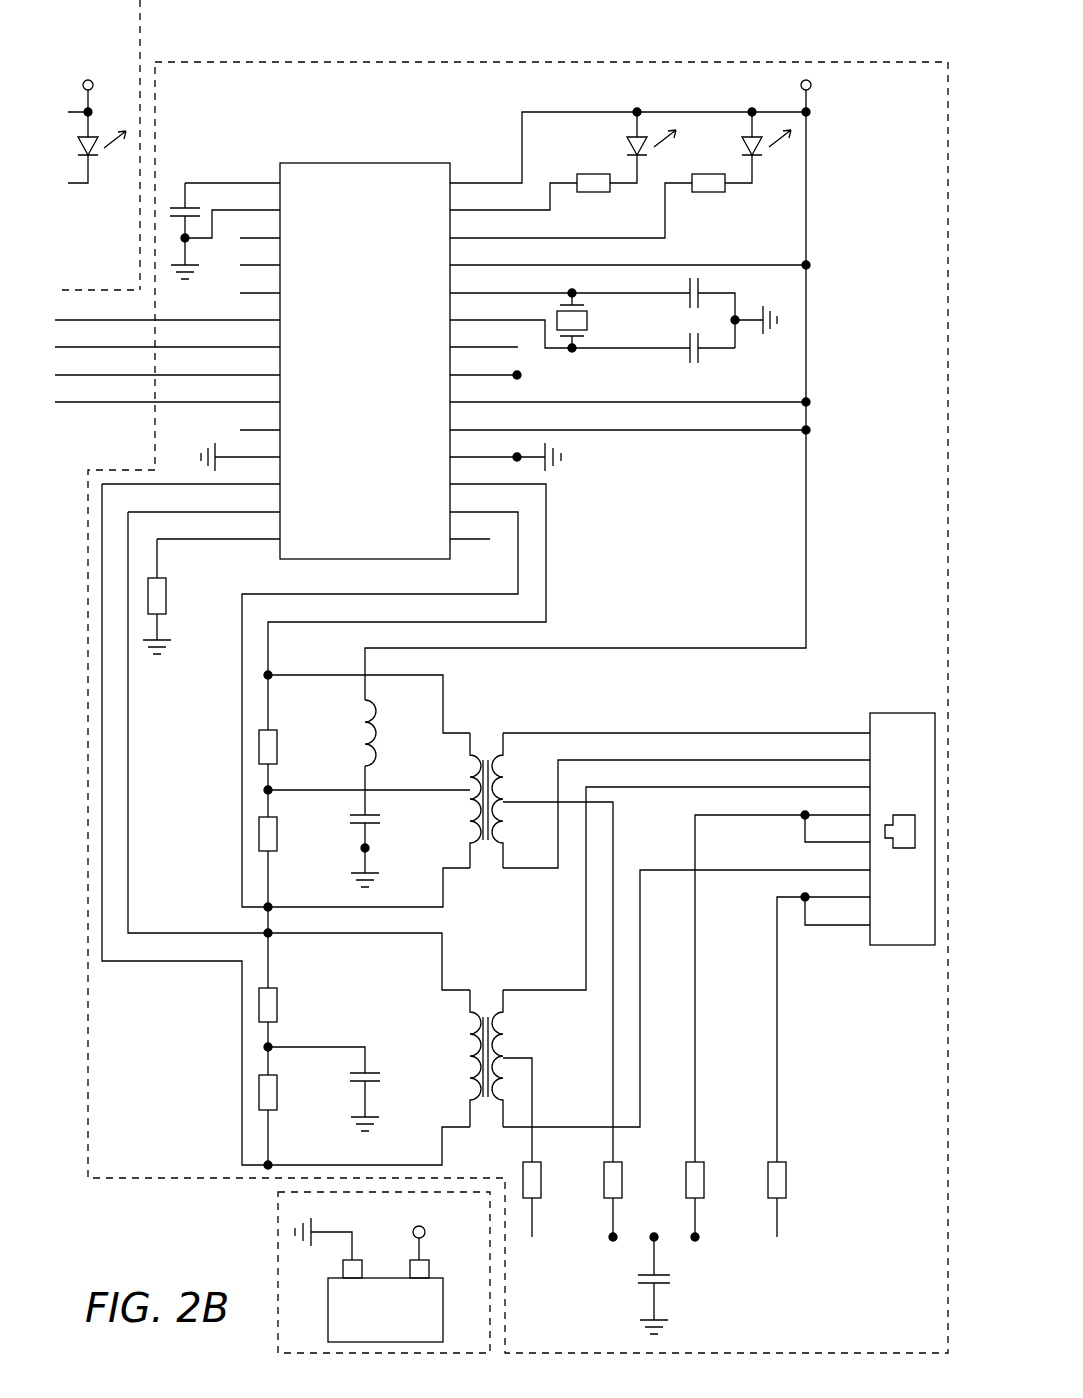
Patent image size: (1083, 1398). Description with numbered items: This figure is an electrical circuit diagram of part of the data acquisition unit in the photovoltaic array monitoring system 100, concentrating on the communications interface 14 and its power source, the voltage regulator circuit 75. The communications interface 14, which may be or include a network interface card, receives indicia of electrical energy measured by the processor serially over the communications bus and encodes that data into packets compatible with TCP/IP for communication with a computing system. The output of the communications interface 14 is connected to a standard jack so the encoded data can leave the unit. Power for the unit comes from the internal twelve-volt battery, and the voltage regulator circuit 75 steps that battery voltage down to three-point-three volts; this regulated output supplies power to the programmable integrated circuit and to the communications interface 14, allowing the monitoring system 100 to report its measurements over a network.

The photovoltaic array monitoring system 100 is at (826, 42).
The communications interface 14 is at (938, 1346).
The voltage regulator circuit 75 is at (484, 1350).